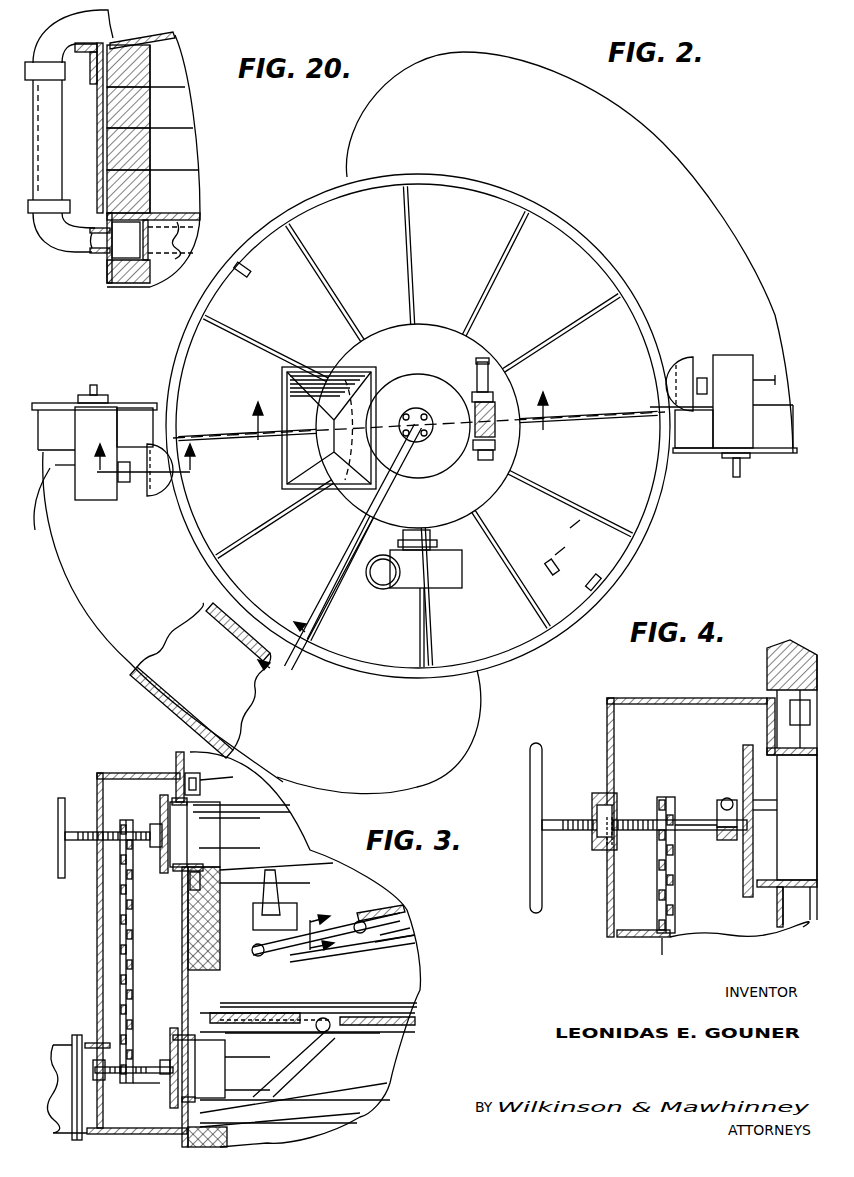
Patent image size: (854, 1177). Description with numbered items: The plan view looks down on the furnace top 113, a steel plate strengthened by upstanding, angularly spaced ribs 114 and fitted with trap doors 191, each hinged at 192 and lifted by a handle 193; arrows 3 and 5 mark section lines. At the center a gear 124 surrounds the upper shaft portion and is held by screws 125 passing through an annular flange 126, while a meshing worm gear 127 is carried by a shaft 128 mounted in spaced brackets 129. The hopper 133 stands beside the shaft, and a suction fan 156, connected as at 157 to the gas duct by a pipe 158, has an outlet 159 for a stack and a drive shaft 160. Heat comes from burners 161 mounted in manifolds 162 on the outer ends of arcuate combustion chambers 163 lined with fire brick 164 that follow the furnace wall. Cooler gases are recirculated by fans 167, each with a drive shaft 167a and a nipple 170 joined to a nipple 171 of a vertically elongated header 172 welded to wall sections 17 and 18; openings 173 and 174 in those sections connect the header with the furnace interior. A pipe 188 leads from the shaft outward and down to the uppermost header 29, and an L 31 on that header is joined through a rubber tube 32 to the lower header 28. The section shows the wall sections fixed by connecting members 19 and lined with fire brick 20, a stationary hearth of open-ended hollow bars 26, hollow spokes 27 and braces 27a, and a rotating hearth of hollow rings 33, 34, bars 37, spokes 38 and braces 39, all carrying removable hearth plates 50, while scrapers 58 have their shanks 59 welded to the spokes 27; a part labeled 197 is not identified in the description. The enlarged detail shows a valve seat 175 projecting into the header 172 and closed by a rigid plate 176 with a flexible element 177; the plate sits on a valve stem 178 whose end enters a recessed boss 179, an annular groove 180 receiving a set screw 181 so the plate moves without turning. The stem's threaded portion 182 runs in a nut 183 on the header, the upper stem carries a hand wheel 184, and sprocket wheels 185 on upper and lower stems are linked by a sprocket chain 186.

In FIG. 20, the pipe 188 is at (44, 40).
In FIG. 2, the pipe 188 is at (335, 552).
In FIG. 20, the ribs 114 is at (174, 30).
In FIG. 2, the ribs 114 is at (620, 420).
In FIG. 20, the top 113 is at (180, 48).
In FIG. 20, the connecting members 19 is at (92, 72).
In FIG. 20, the fire brick 20 is at (150, 137).
In FIG. 2, the fire brick 20 is at (298, 656).
In FIG. 3, the fire brick 20 is at (212, 972).
In FIG. 20, the tube 32 is at (62, 150).
In FIG. 20, the header or manifold 29 is at (150, 218).
In FIG. 4, the header or manifold 29 is at (793, 668).
In FIG. 3, the header or manifold 29 is at (210, 782).
In FIG. 20, the L 31 is at (72, 252).
In FIG. 2, the combustion chambers 163 is at (750, 225).
In FIG. 2, the fire brick 164 is at (160, 715).
In FIG. 2, the gear 124 is at (422, 368).
In FIG. 2, the screws 125 is at (400, 412).
In FIG. 2, the annular flange 126 is at (414, 440).
In FIG. 3, the annular flange 126 is at (180, 1055).
In FIG. 2, the shaft 128 is at (505, 352).
In FIG. 2, the worm gear 127 is at (497, 408).
In FIG. 2, the brackets 129 is at (472, 397).
In FIG. 2, the hopper 133 is at (272, 490).
In FIG. 2, the induced or suction fan 156 is at (455, 585).
In FIG. 2, the connection 157 is at (440, 545).
In FIG. 2, the pipe 158 is at (430, 535).
In FIG. 2, the outlet 159 is at (380, 585).
In FIG. 2, the drive shaft 160 is at (418, 602).
In FIG. 2, the burner 161 is at (80, 392).
In FIG. 2, the manifolds 162 is at (140, 402).
In FIG. 2, the suction or induced fans 167 is at (90, 500).
In FIG. 2, the drive shaft 167a is at (36, 535).
In FIG. 2, the nipple 171 is at (128, 495).
In FIG. 3, the nipple 171 is at (90, 1043).
In FIG. 2, the header or manifold 172 is at (150, 495).
In FIG. 4, the header or manifold 172 is at (625, 697).
In FIG. 3, the header or manifold 172 is at (96, 956).
In FIG. 2, the nut 183 is at (130, 455).
In FIG. 4, the nut 183 is at (598, 795).
In FIG. 2, the hand wheel 184 is at (100, 465).
In FIG. 4, the hand wheel 184 is at (528, 786).
In FIG. 3, the hand wheel 184 is at (60, 797).
In FIG. 2, the trap doors 191 is at (592, 518).
In FIG. 2, the hinge 192 is at (561, 565).
In FIG. 2, the handle 193 is at (598, 590).
In FIG. 2, the section line 5 is at (400, 432).
In FIG. 2, the section line 3 is at (145, 469).
In FIG. 4, the wall section 18 is at (766, 657).
In FIG. 3, the wall section 18 is at (176, 768).
In FIG. 4, the header or manifold 28 is at (783, 935).
In FIG. 3, the header or manifold 28 is at (205, 895).
In FIG. 4, the opening 174 is at (768, 795).
In FIG. 3, the opening 174 is at (208, 845).
In FIG. 4, the valve seat 175 is at (770, 878).
In FIG. 3, the valve seat 175 is at (178, 875).
In FIG. 4, the valve plate 176 is at (742, 750).
In FIG. 3, the valve plate 176 is at (165, 873).
In FIG. 4, the flexible element 177 is at (758, 828).
In FIG. 3, the flexible element 177 is at (210, 852).
In FIG. 4, the valve stem 178 is at (700, 832).
In FIG. 4, the recessed boss 179 is at (728, 840).
In FIG. 3, the recessed boss 179 is at (155, 847).
In FIG. 4, the annular groove 180 is at (718, 815).
In FIG. 4, the set screw 181 is at (622, 812).
In FIG. 3, the set screw 181 is at (165, 838).
In FIG. 4, the screw threaded portion 182 is at (583, 835).
In FIG. 3, the screw threaded portion 182 is at (119, 952).
In FIG. 4, the sprocket wheel 185 is at (657, 845).
In FIG. 3, the sprocket wheel 185 is at (133, 820).
In FIG. 4, the sprocket chain 186 is at (676, 912).
In FIG. 3, the sprocket chain 186 is at (160, 975).
In FIG. 3, the nipple 170 is at (53, 1045).
In FIG. 3, the opening 173 is at (247, 1051).
In FIG. 3, the bar 197 is at (222, 1088).
In FIG. 3, the wall section 17 is at (128, 1138).
In FIG. 3, the hollow bars 26 is at (258, 790).
In FIG. 3, the hollow spokes 27 is at (335, 1097).
In FIG. 3, the braces 27a is at (290, 845).
In FIG. 3, the hollow ring 33 is at (258, 936).
In FIG. 3, the hollow ring 34 is at (365, 920).
In FIG. 3, the hollow bars 37 is at (345, 948).
In FIG. 3, the hollow spokes 38 is at (310, 988).
In FIG. 3, the braces 39 is at (405, 930).
In FIG. 3, the hearth plates 50 is at (350, 935).
In FIG. 3, the plows or scrapers 58 is at (297, 905).
In FIG. 3, the shanks 59 is at (278, 880).